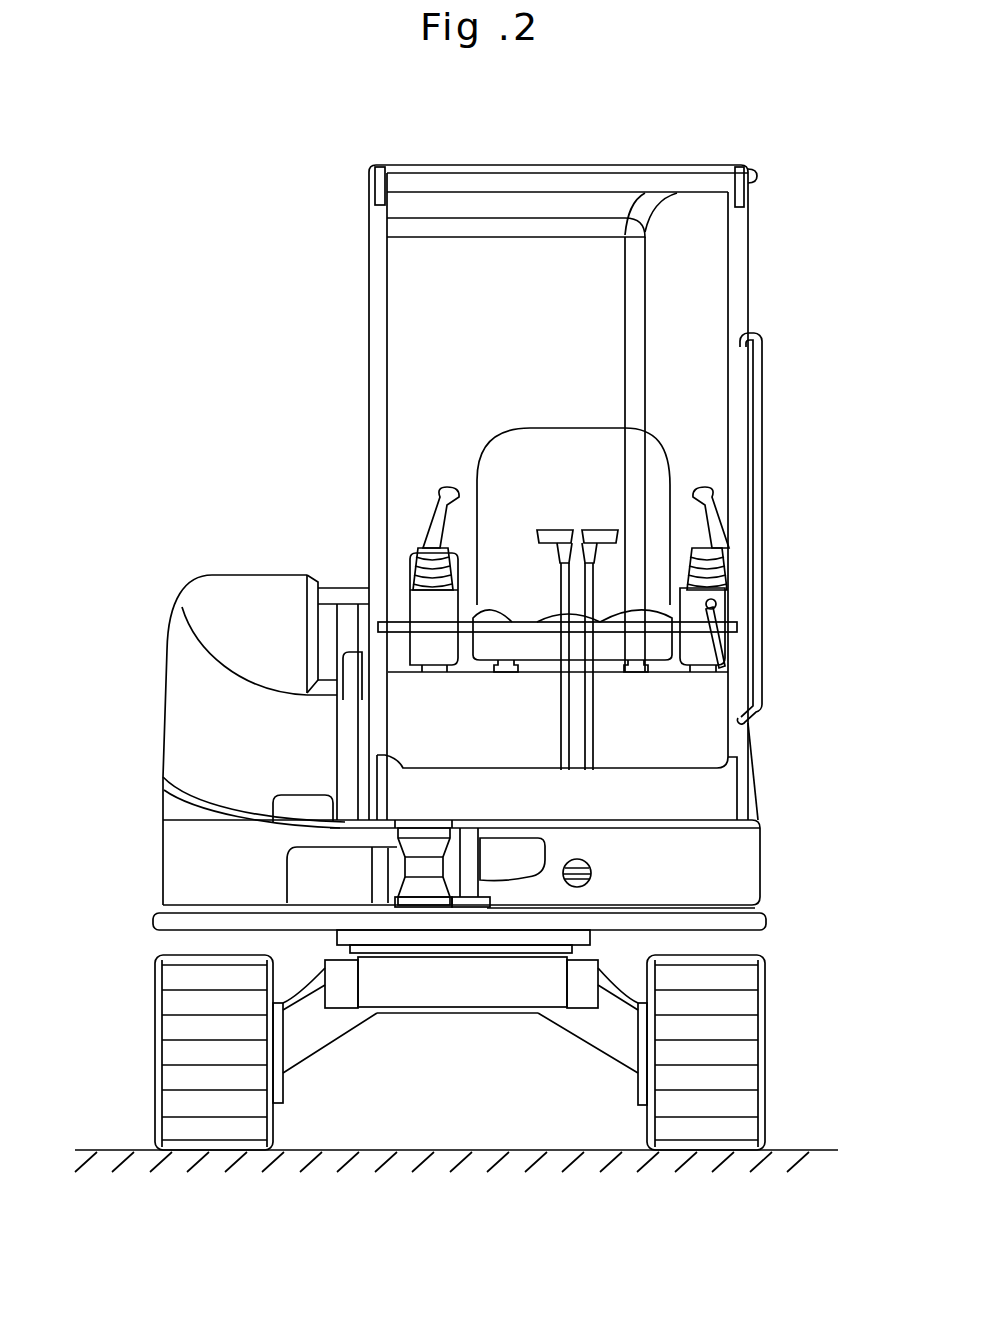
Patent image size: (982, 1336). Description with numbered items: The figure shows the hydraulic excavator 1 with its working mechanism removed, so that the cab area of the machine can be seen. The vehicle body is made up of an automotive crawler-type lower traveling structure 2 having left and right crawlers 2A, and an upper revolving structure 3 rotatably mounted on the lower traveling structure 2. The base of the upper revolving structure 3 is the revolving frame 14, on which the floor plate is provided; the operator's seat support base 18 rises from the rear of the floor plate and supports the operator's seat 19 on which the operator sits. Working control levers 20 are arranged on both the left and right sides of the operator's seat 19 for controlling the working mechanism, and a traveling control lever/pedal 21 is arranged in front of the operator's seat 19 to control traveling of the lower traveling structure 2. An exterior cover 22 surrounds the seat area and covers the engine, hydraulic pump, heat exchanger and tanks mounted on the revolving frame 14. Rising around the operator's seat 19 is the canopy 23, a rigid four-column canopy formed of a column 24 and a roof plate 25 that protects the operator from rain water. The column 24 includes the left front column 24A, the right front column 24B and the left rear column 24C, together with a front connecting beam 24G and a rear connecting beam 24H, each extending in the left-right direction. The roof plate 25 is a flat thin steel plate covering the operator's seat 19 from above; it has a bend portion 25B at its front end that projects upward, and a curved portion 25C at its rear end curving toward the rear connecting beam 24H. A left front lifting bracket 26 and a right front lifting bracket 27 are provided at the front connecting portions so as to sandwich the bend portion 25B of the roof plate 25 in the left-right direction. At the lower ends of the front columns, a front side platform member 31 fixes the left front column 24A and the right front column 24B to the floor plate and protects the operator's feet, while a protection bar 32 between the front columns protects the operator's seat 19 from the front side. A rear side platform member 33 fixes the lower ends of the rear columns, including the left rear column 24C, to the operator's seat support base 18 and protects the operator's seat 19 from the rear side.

The hydraulic excavator 1 is at (232, 520).
The lower traveling structure 2 is at (750, 1058).
The crawler 2A is at (740, 1005).
The upper revolving structure 3 is at (163, 724).
The revolving frame 14 is at (190, 916).
The operator's seat support base 18 is at (693, 703).
The operator's seat 19 is at (635, 460).
The working control lever 20 is at (442, 487).
The traveling control lever/pedal 21 is at (540, 542).
The exterior cover 22 is at (203, 597).
The canopy 23 is at (697, 165).
The column 24 is at (378, 283).
The left front column 24A is at (738, 355).
The right front column 24B is at (383, 350).
The left rear column 24C is at (638, 260).
The front connecting beam 24G is at (498, 180).
The rear connecting beam 24H is at (413, 228).
The roof plate 25 is at (650, 165).
The bend portion 25B is at (577, 168).
The curved portion 25C is at (420, 203).
The left front lifting bracket 26 is at (740, 167).
The right front lifting bracket 27 is at (377, 165).
The front side platform member 31 is at (708, 797).
The protection bar 32 is at (670, 630).
The rear side platform member 33 is at (408, 530).